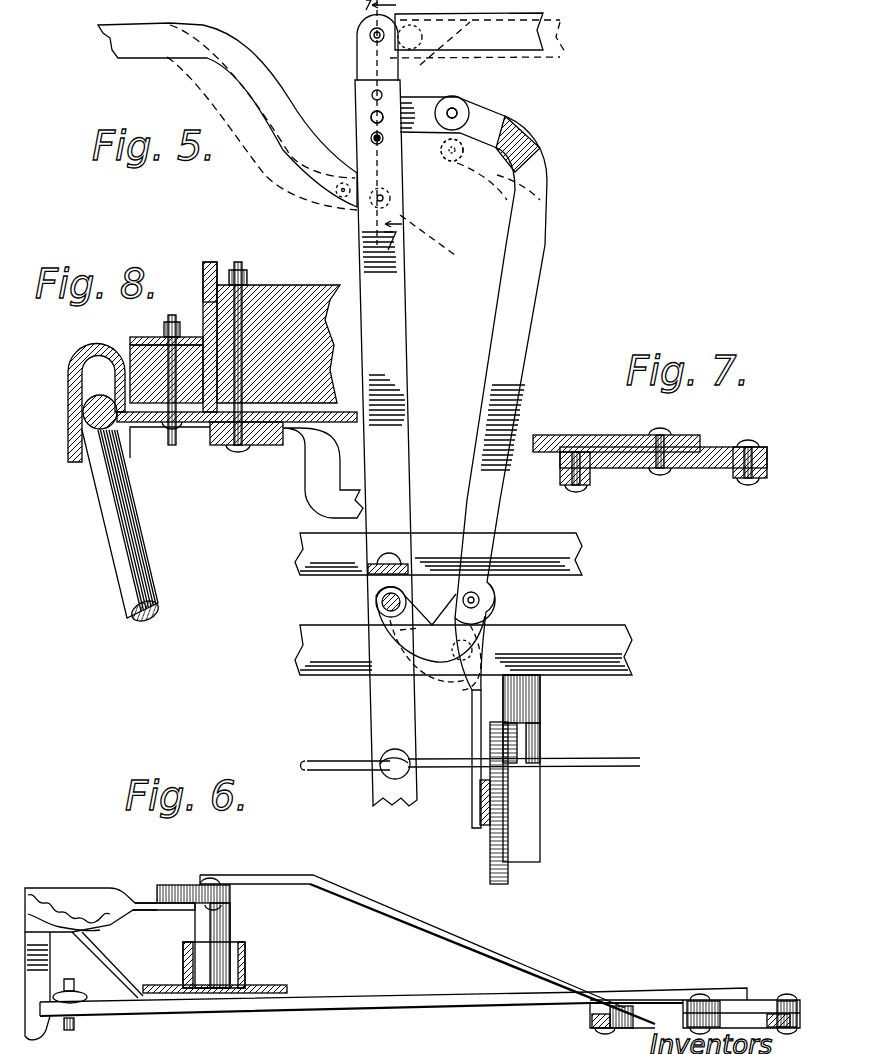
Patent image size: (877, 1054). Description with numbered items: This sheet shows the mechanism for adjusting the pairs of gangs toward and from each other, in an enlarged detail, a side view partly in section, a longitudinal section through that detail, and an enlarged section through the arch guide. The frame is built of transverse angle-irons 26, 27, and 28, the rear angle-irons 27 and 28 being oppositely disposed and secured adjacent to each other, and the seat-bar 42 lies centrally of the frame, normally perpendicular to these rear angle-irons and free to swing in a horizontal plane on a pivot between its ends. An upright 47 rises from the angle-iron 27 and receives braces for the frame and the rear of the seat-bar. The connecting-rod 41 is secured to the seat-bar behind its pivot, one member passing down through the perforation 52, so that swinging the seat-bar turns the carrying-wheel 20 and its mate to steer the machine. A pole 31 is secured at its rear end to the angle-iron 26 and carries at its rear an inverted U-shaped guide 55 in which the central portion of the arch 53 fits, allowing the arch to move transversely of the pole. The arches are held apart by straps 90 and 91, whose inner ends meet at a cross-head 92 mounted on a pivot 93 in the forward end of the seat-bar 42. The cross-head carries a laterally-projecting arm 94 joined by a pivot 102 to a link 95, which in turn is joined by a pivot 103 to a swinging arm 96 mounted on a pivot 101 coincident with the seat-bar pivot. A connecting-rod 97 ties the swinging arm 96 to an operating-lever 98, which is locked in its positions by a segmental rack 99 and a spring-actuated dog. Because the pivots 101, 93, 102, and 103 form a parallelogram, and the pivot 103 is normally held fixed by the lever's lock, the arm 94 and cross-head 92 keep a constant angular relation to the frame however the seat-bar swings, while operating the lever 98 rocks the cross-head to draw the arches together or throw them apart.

In FIG. 8, the carrying-wheel 20 is at (210, 337).
In FIG. 8, the transverse angle-iron 26 is at (205, 268).
In FIG. 5, the transverse angle-iron 27 is at (513, 542).
In FIG. 6, the transverse angle-iron 27 is at (270, 985).
In FIG. 5, the transverse angle-iron 28 is at (580, 655).
In FIG. 6, the transverse angle-iron 28 is at (183, 982).
In FIG. 8, the pole 31 is at (280, 302).
In FIG. 6, the connecting-rod 41 is at (78, 962).
In FIG. 5, the seat-bar 42 is at (427, 330).
In FIG. 7, the seat-bar 42 is at (600, 440).
In FIG. 6, the seat-bar 42 is at (385, 1005).
In FIG. 5, the upright 47 is at (400, 562).
In FIG. 6, the perforation in the seat-bar 52 is at (75, 1024).
In FIG. 8, the arch 53 is at (136, 540).
In FIG. 8, the inverted U-shaped guide 55 is at (67, 382).
In FIG. 5, the strap 90 is at (163, 42).
In FIG. 6, the strap 90 is at (612, 1012).
In FIG. 5, the strap 91 is at (468, 28).
In FIG. 6, the strap 91 is at (770, 1006).
In FIG. 5, the cross-head 92 is at (355, 65).
In FIG. 6, the cross-head 92 is at (757, 1007).
In FIG. 5, the pivot 93 is at (358, 112).
In FIG. 7, the pivot 93 is at (664, 440).
In FIG. 5, the laterally-projecting arm 94 is at (447, 152).
In FIG. 5, the link 95 is at (518, 326).
In FIG. 6, the link 95 is at (308, 876).
In FIG. 5, the swinging arm 96 is at (440, 622).
In FIG. 6, the swinging arm 96 is at (185, 888).
In FIG. 5, the connecting-rod 97 is at (471, 723).
In FIG. 6, the connecting-rod 97 is at (149, 920).
In FIG. 5, the operating-lever 98 is at (488, 820).
In FIG. 5, the segmental rack 99 is at (503, 862).
In FIG. 6, the segmental rack 99 is at (55, 896).
In FIG. 5, the pivot 101 is at (376, 602).
In FIG. 5, the pivot 102 is at (456, 110).
In FIG. 5, the pivot 103 is at (480, 598).
In FIG. 6, the pivot 103 is at (218, 880).